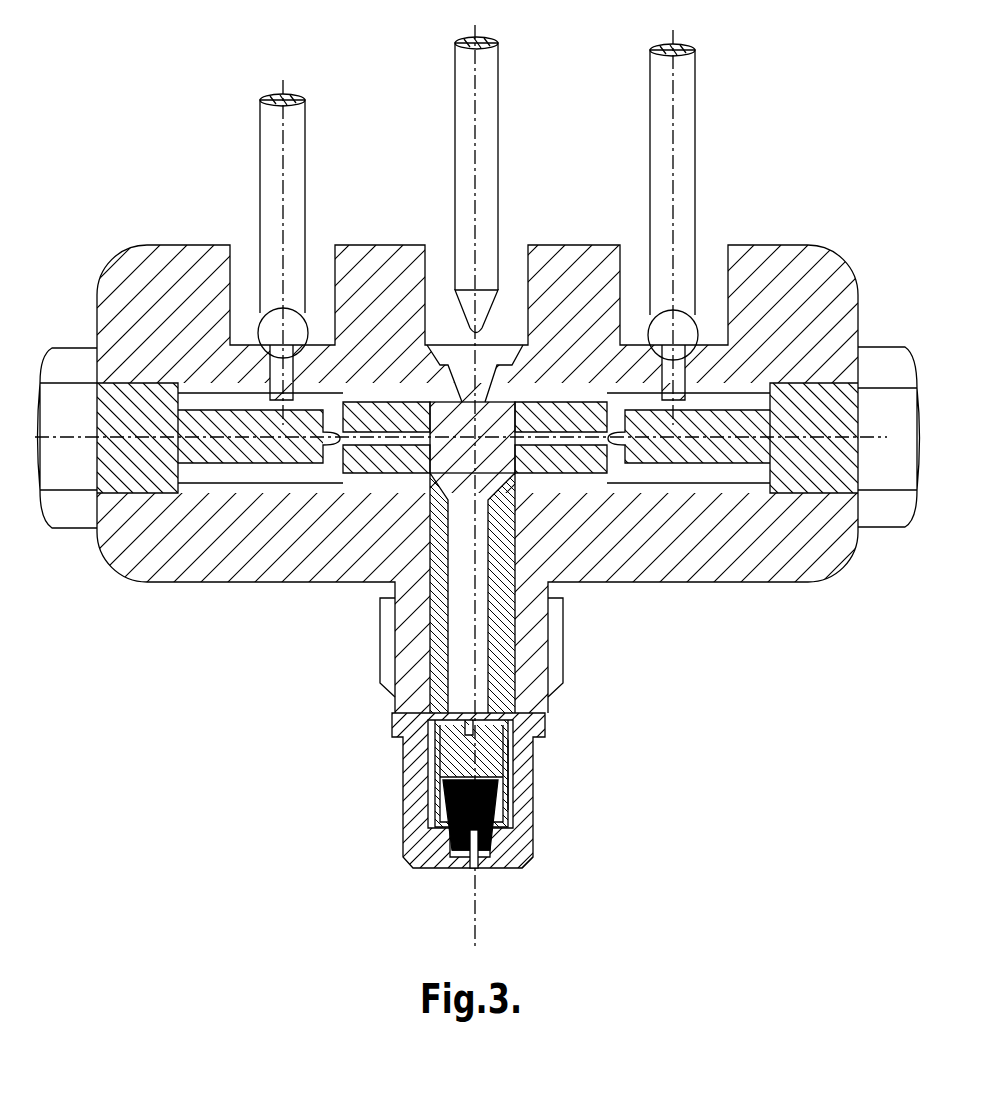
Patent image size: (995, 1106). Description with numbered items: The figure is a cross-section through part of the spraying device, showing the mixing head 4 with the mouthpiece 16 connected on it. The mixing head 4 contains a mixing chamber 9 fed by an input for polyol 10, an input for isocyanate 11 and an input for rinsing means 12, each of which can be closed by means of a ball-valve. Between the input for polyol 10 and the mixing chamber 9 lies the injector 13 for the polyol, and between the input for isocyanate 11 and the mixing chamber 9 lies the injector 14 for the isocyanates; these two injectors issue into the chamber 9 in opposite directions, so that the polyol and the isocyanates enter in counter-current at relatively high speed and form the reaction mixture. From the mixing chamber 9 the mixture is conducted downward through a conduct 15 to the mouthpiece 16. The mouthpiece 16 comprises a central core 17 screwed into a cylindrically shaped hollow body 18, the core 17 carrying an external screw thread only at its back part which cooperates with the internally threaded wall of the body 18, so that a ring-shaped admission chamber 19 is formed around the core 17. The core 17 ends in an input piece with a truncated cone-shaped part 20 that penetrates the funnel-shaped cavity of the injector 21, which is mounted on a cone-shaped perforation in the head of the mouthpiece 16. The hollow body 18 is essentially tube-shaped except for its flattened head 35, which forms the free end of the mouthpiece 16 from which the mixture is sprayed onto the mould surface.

The mixing head 4 is at (766, 233).
The mixing chamber 9 is at (490, 453).
The input for polyol 10 is at (247, 290).
The input for isocyanate 11 is at (640, 297).
The input for rinsing means 12 is at (443, 297).
The injector for the polyol 13 is at (386, 452).
The injector for the isocyanates 14 is at (560, 453).
The conduct 15 is at (424, 613).
The mouthpiece 16 is at (548, 832).
The central core 17 is at (450, 758).
The hollow body 18 is at (412, 773).
The ring-shaped admission chamber 19 is at (513, 802).
The truncated cone-shaped part 20 is at (493, 852).
The injector 21 is at (450, 852).
The head 35 is at (527, 857).